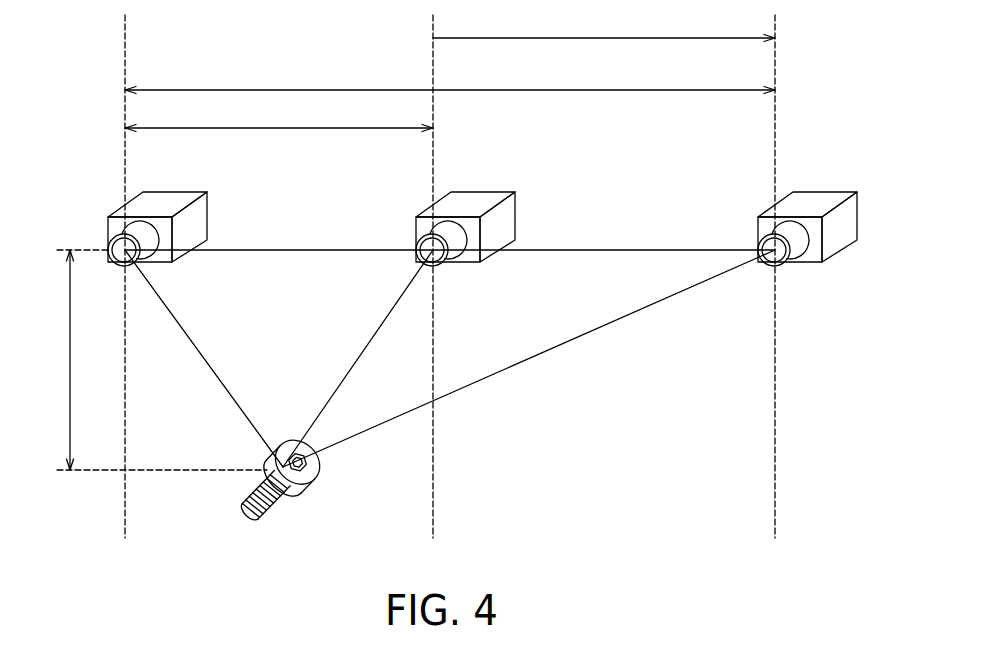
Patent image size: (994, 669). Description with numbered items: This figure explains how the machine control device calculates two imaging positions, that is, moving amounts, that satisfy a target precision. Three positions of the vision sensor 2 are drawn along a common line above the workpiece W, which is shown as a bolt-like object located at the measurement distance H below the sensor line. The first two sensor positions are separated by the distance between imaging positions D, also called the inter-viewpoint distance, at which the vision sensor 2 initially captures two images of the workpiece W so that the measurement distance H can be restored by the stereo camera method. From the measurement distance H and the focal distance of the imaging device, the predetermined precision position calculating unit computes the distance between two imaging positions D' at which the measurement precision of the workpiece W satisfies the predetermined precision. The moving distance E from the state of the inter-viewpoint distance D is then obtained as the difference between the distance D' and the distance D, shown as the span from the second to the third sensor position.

The vision sensor 2 is at (173, 197).
The workpiece W is at (270, 510).
The measurement distance H is at (57, 360).
The distance between imaging positions D is at (279, 117).
The distance between two imaging positions satisfying predetermined precision D' is at (450, 79).
The moving distance E is at (604, 26).